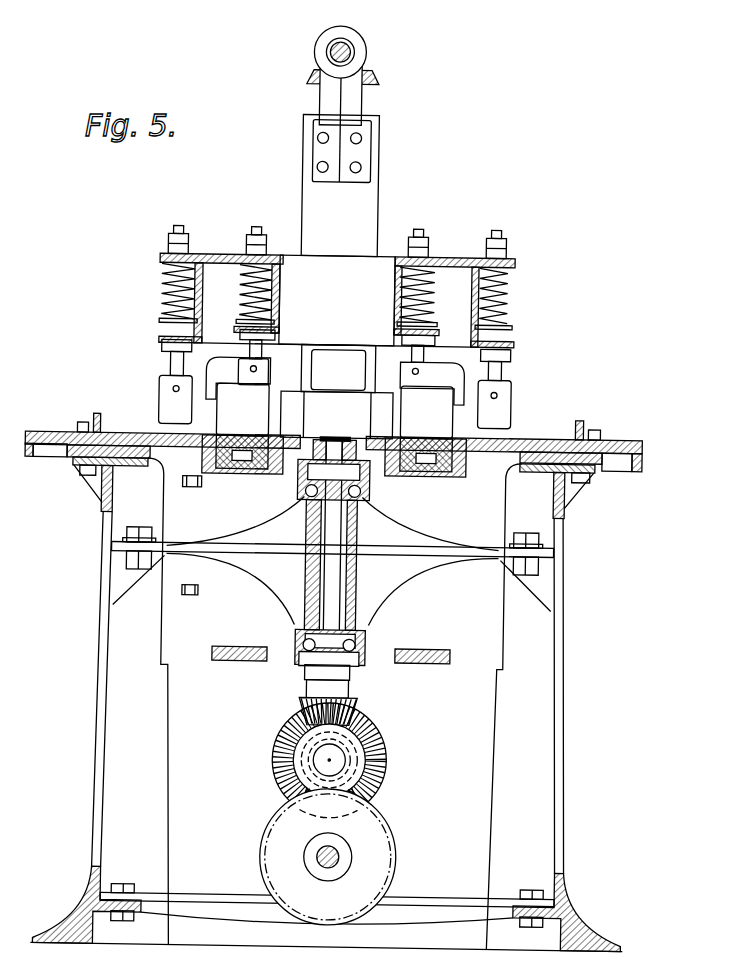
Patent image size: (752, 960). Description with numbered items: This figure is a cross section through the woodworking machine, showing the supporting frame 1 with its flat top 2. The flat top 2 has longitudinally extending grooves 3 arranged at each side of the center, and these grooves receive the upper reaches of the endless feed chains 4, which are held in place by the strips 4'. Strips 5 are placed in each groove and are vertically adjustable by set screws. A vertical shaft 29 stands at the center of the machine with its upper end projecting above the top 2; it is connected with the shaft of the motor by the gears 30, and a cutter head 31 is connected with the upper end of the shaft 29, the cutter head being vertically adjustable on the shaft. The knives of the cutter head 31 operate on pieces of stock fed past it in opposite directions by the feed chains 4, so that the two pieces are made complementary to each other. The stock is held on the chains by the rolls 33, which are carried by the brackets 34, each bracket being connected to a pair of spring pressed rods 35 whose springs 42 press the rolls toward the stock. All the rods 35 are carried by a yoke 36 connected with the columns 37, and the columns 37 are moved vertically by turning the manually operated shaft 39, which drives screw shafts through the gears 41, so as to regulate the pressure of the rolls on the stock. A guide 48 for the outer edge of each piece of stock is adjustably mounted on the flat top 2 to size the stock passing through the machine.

The supporting frame 1 is at (112, 775).
The flat top 2 is at (113, 435).
The longitudinally extending grooves 3 is at (466, 458).
The endless feed chains 4 is at (334, 411).
The strips 4' is at (334, 407).
The strips 5 is at (203, 455).
The vertical shaft 29 is at (332, 577).
The gears 30 is at (303, 703).
The cutter head 31 is at (336, 393).
The rolls 33 is at (266, 389).
The brackets 34 is at (512, 366).
The spring pressed rods 35 is at (169, 361).
The yoke 36 is at (337, 300).
The columns 37 is at (372, 231).
The manually operated shaft 39 is at (341, 48).
The gears 41 is at (366, 76).
The springs 42 is at (243, 286).
The guide 48 is at (94, 418).